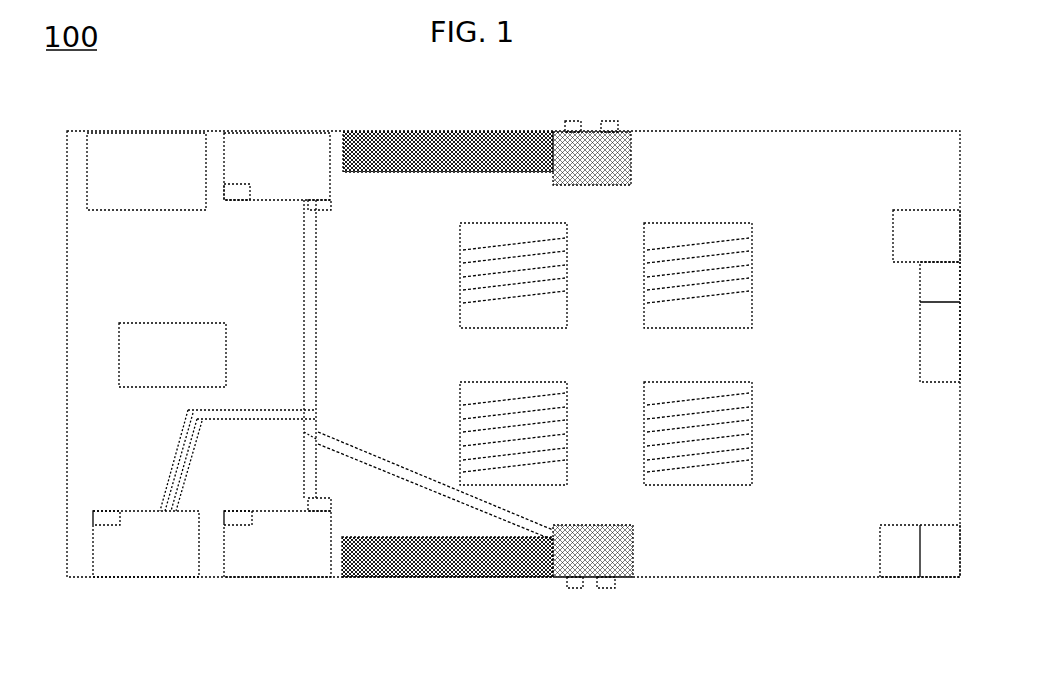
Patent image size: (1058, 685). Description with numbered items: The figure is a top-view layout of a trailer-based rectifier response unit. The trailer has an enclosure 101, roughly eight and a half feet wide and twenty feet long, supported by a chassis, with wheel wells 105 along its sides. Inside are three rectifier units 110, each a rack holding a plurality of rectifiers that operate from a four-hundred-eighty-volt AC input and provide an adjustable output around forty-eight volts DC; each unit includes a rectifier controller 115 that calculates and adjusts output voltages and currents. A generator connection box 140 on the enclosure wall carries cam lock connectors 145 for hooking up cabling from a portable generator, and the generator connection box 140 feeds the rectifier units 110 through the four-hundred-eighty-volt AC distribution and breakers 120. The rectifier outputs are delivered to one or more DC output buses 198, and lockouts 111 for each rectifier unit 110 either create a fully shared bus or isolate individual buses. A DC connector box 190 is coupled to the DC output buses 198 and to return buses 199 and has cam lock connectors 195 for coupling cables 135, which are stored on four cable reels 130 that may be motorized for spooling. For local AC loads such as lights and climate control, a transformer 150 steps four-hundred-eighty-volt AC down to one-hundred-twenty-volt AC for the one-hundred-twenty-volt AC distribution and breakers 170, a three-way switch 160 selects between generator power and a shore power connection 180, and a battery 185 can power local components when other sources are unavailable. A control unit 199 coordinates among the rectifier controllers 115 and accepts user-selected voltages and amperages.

The enclosure 101 is at (868, 130).
The wheel wells 105 is at (386, 173).
The rectifier units 110 is at (152, 558).
The lockouts 111 is at (325, 210).
The rectifier controller 115 is at (236, 200).
The 480V AC distribution and breakers 120 is at (135, 192).
The cable reels 130 is at (644, 392).
The cables 135 is at (636, 466).
The generator connection box 140 is at (632, 160).
The cam lock connectors 145 is at (608, 121).
The transformer 150 is at (893, 234).
The three-way switch 160 is at (920, 287).
The 120V AC distribution and breakers 170 is at (920, 352).
The shore power connection 180 is at (946, 523).
The battery 185 is at (880, 537).
The DC connector box 190 is at (636, 548).
The cam lock connectors 195 is at (575, 588).
The DC output buses 198 is at (358, 430).
The control unit 199 is at (304, 378).